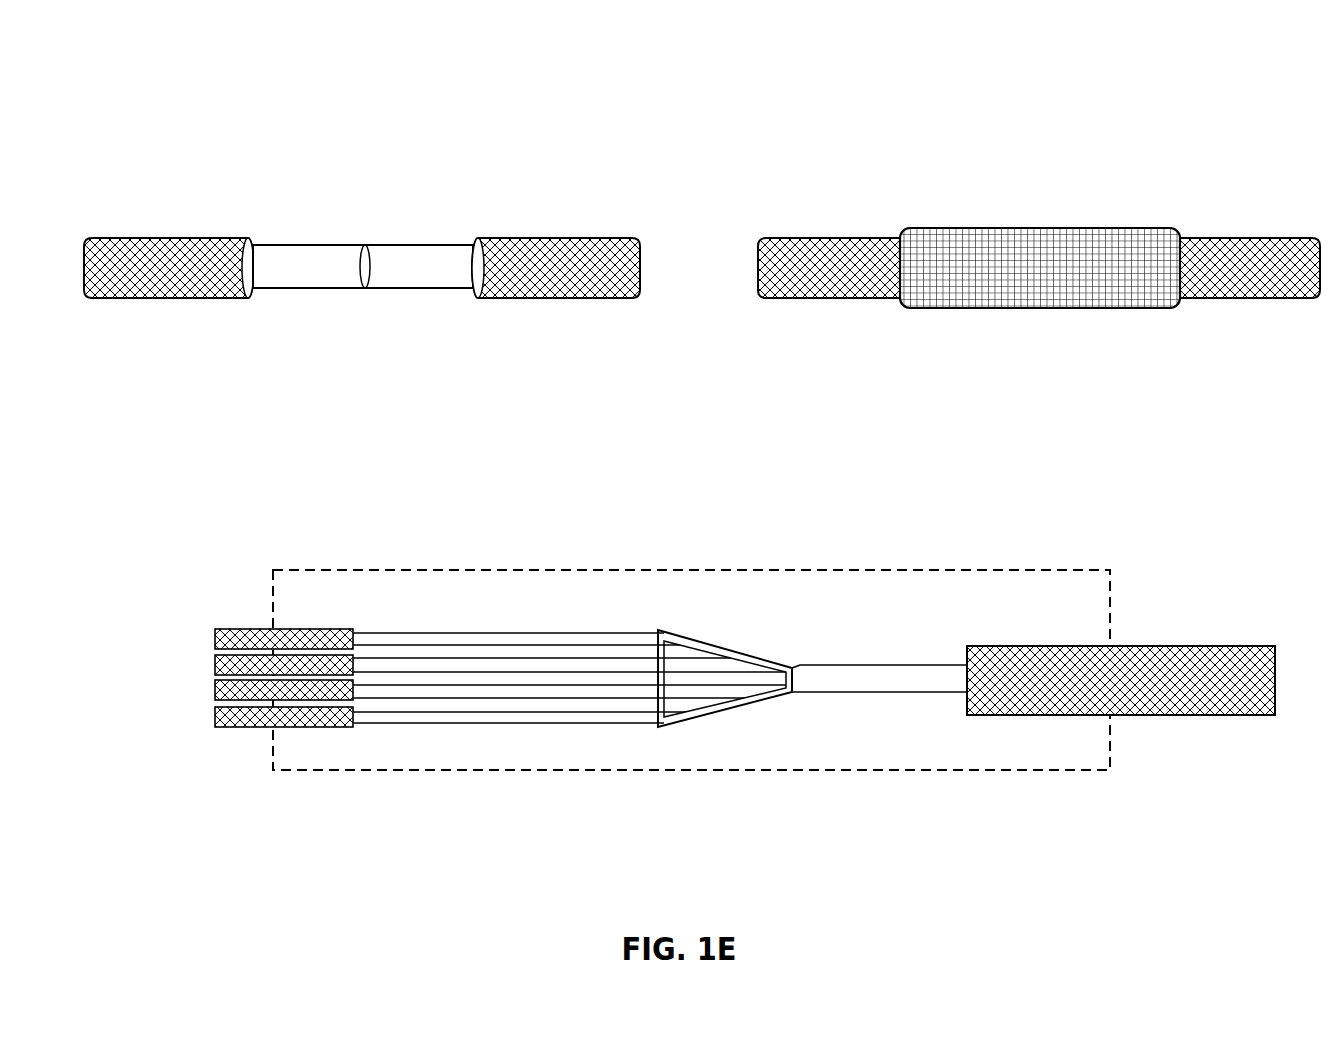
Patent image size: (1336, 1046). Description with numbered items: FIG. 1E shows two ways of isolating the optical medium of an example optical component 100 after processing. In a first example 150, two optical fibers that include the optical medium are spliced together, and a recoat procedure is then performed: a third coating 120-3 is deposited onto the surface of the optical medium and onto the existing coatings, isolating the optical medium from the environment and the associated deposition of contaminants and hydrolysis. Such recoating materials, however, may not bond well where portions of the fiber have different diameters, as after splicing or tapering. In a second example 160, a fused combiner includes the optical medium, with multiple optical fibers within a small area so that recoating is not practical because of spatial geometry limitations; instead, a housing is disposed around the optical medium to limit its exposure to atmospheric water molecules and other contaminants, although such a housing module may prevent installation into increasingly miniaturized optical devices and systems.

The optical component 100 is at (186, 64).
The first example 150 is at (256, 150).
The second example 160 is at (361, 512).
The third coating 120-3 is at (1040, 265).